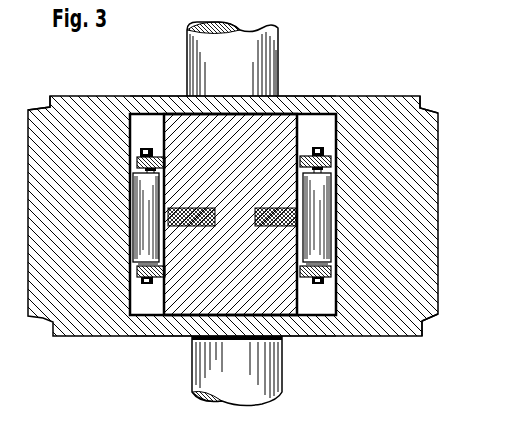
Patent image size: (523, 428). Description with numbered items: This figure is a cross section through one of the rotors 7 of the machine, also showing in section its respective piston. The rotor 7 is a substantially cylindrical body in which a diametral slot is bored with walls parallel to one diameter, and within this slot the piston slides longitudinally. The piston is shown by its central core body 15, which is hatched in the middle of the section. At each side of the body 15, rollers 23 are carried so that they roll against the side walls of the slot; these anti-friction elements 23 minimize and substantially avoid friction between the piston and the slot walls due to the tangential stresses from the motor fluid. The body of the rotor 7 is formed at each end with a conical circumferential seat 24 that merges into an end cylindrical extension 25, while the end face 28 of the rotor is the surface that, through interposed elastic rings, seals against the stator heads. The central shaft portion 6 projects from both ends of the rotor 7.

The shaft 6 is at (279, 47).
The rotor 7 is at (437, 192).
The piston body 15 is at (297, 113).
The rollers 23 is at (318, 213).
The conical circumferential seat 24 is at (428, 110).
The end cylindrical extension 25 is at (50, 107).
The end face 28 is at (165, 96).